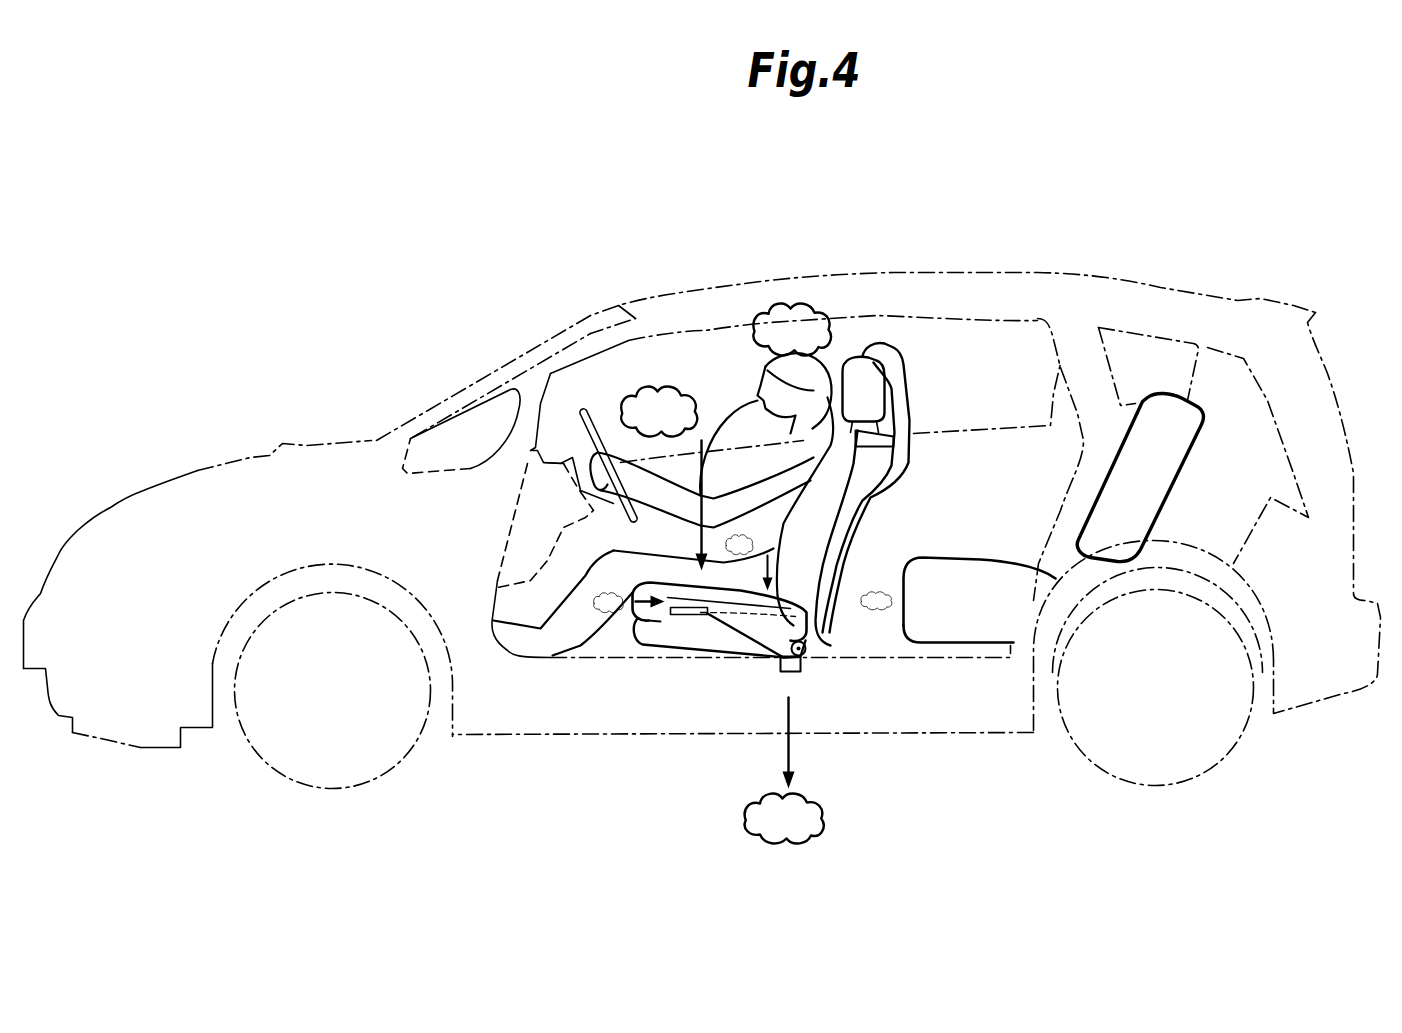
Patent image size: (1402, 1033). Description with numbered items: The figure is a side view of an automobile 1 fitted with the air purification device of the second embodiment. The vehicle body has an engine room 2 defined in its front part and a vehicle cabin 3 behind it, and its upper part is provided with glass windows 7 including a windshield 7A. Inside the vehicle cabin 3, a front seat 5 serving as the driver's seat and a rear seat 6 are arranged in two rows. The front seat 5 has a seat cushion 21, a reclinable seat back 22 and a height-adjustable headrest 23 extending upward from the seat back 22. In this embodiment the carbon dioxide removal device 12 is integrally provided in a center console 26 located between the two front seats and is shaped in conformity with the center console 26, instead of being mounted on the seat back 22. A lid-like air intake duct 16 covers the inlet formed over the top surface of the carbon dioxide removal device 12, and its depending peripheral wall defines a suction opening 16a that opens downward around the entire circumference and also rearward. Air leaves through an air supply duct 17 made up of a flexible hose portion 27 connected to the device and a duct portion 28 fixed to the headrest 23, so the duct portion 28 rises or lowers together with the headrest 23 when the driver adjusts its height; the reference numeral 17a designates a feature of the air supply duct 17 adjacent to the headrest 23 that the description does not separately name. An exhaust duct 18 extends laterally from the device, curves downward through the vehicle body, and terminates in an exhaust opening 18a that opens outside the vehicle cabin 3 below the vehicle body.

The automobile 1 is at (920, 240).
The engine room 2 is at (236, 566).
The vehicle cabin 3 is at (1049, 471).
The front seat 5 is at (667, 640).
The rear seat 6 is at (993, 575).
The glass windows 7 is at (983, 333).
The windshield 7A is at (518, 343).
The carbon dioxide removal device 12 is at (760, 630).
The air intake duct 16 is at (687, 600).
The suction opening 16a is at (740, 610).
The air supply duct 17 is at (887, 385).
The air outlet 17a is at (841, 347).
The exhaust duct 18 is at (803, 667).
The exhaust opening 18a is at (785, 673).
The seat cushion 21 is at (620, 605).
The seat back 22 is at (770, 473).
The headrest 23 is at (763, 365).
The center console 26 is at (673, 613).
The hose portion 27 is at (857, 523).
The duct portion 28 is at (913, 428).